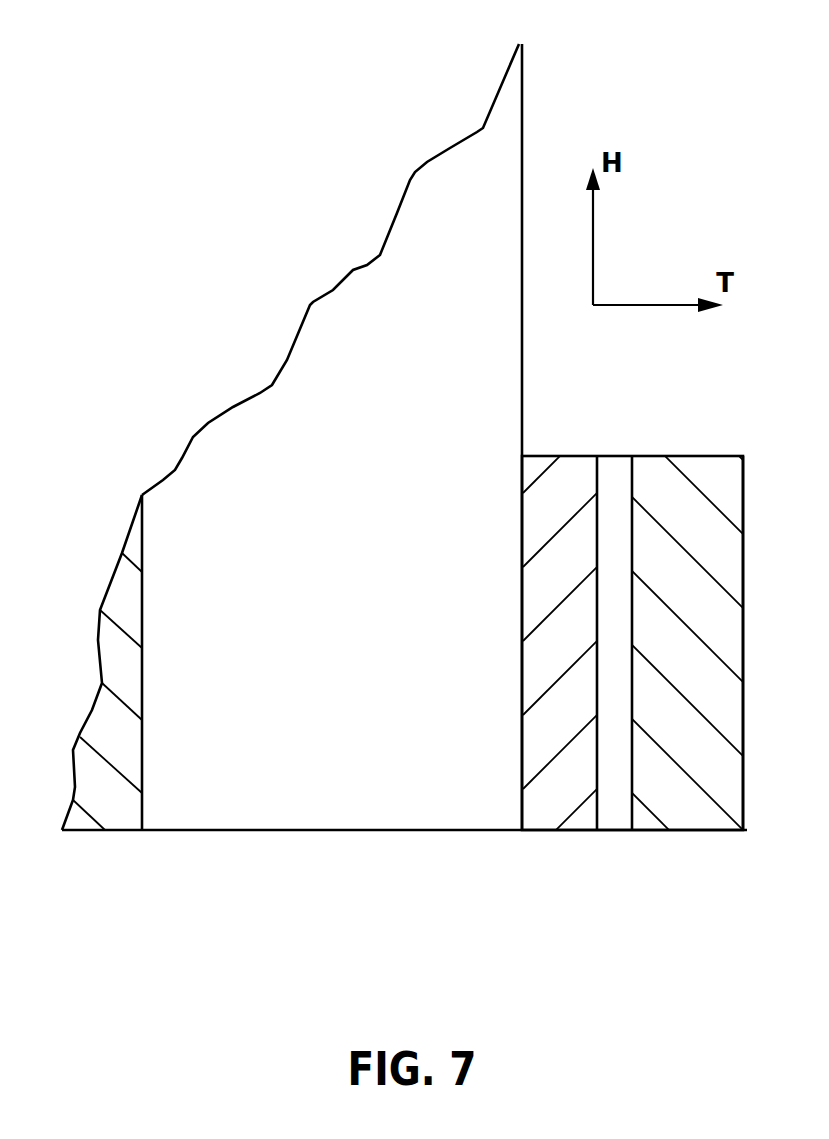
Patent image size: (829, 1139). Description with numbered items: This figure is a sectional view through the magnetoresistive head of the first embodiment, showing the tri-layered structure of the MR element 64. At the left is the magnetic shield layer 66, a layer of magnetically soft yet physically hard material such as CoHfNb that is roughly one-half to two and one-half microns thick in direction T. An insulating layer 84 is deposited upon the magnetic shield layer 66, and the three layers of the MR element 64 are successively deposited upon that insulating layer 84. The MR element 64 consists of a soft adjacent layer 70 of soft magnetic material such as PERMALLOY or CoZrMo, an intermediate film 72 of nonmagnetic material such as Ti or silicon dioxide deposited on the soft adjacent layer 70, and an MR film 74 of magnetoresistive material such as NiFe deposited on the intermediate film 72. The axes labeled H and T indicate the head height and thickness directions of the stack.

The MR element 64 is at (743, 448).
The magnetic shield layer 66 is at (120, 813).
The soft adjacent layer 70 is at (545, 817).
The intermediate film 72 is at (617, 818).
The MR film 74 is at (697, 818).
The insulating layer 84 is at (327, 812).